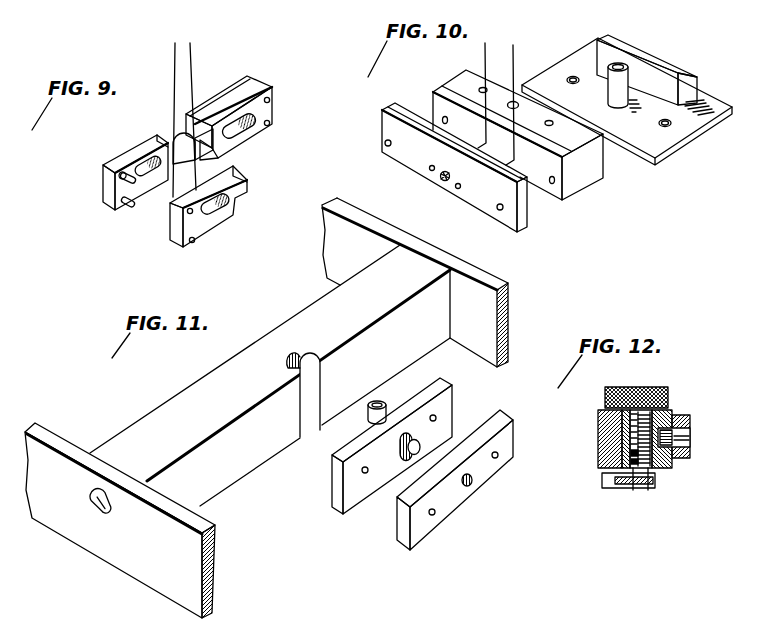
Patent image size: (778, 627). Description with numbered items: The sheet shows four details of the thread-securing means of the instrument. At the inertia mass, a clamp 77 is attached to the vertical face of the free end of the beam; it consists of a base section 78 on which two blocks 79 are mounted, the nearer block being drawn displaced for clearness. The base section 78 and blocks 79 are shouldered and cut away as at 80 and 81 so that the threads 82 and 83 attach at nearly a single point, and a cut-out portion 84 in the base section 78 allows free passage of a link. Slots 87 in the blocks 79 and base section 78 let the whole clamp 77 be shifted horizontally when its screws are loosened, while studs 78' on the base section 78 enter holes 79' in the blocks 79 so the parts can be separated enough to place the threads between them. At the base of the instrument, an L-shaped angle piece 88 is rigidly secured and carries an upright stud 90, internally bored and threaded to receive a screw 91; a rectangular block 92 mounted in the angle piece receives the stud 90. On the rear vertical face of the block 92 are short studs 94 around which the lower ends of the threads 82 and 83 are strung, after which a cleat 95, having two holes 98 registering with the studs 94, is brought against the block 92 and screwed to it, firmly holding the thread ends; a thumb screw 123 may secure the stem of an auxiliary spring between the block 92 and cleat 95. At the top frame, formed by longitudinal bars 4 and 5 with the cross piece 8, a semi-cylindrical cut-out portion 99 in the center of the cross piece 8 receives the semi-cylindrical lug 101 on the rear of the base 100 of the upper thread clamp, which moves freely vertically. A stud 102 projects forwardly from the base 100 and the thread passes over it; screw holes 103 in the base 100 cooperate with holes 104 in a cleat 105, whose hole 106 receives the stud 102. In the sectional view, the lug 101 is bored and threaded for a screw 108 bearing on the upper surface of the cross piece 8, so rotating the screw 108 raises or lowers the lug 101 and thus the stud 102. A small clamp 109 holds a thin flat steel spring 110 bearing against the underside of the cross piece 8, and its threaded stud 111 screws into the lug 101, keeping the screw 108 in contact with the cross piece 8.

In FIG. 11, the longitudinally disposed bar 4 is at (515, 315).
In FIG. 11, the longitudinally disposed bar 5 is at (153, 573).
In FIG. 11, the cross piece 8 is at (163, 398).
In FIG. 12, the cross piece 8 is at (597, 423).
In FIG. 9, the clamp 77 is at (160, 198).
In FIG. 9, the base section 78 is at (229, 110).
In FIG. 9, the stud 78' is at (187, 158).
In FIG. 9, the block 79 is at (228, 177).
In FIG. 9, the hole 79' is at (208, 247).
In FIG. 9, the shoulder cut-away 80 is at (233, 177).
In FIG. 9, the shoulder cut-away 81 is at (160, 153).
In FIG. 9, the thread 82 is at (193, 63).
In FIG. 10, the thread 82 is at (523, 54).
In FIG. 9, the thread 83 is at (176, 70).
In FIG. 10, the thread 83 is at (483, 54).
In FIG. 9, the cut-out portion 84 is at (178, 136).
In FIG. 9, the slot 87 is at (253, 130).
In FIG. 10, the L-shaped angle piece 88 is at (703, 112).
In FIG. 10, the upright stud 90 is at (627, 75).
In FIG. 10, the screw 91 is at (388, 148).
In FIG. 10, the rectangular block 92 is at (588, 180).
In FIG. 10, the short stud 94 is at (507, 163).
In FIG. 10, the cleat 95 is at (512, 232).
In FIG. 10, the hole 98 is at (457, 187).
In FIG. 11, the semi-cylindrical cut-out portion 99 is at (303, 357).
In FIG. 11, the base of the thread clamp 100 is at (450, 368).
In FIG. 12, the base of the thread clamp 100 is at (663, 465).
In FIG. 11, the semi-cylindrical lug 101 is at (383, 403).
In FIG. 12, the semi-cylindrical lug 101 is at (623, 455).
In FIG. 11, the stud 102 is at (413, 457).
In FIG. 12, the stud 102 is at (682, 435).
In FIG. 11, the screw hole 103 is at (437, 417).
In FIG. 11, the hole 104 is at (500, 458).
In FIG. 11, the cleat 105 is at (457, 503).
In FIG. 12, the cleat 105 is at (690, 450).
In FIG. 11, the hole 106 is at (477, 487).
In FIG. 12, the screw 108 is at (657, 390).
In FIG. 12, the small clamp 109 is at (610, 488).
In FIG. 12, the steel spring 110 is at (648, 486).
In FIG. 12, the threaded stud 111 is at (632, 490).
In FIG. 10, the thumb screw 123 is at (438, 168).